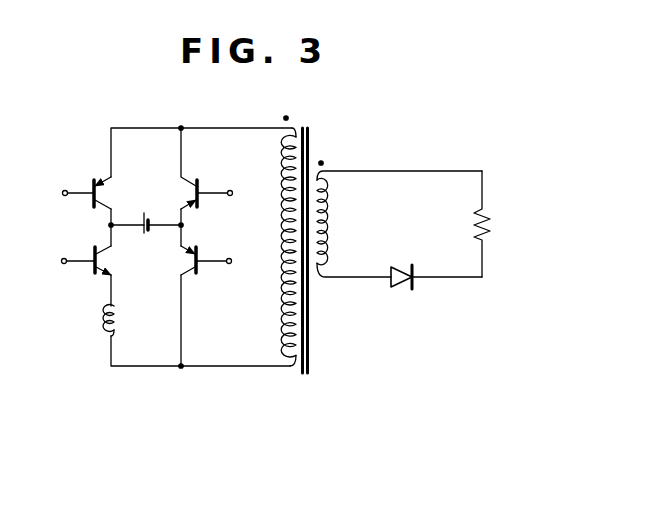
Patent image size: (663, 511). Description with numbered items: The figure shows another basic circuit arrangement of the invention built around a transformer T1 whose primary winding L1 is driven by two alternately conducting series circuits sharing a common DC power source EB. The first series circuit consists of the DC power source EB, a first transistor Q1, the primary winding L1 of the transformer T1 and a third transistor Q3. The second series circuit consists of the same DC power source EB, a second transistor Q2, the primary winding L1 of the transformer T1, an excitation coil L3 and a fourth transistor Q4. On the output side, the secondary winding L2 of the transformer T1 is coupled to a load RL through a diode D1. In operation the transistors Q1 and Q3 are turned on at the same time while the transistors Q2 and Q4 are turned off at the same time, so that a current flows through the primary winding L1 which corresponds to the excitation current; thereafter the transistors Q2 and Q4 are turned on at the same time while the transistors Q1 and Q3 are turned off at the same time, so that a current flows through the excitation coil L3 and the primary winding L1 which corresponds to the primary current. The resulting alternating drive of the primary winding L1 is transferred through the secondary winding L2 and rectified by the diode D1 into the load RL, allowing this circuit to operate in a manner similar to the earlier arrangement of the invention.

The first transistor Q1 is at (87, 185).
The second transistor Q2 is at (207, 168).
The third transistor Q3 is at (206, 274).
The fourth transistor Q4 is at (87, 276).
The DC power source EB is at (146, 241).
The primary winding L1 is at (273, 241).
The secondary winding L2 is at (399, 219).
The excitation coil L3 is at (121, 320).
The transformer T1 is at (303, 127).
The load RL is at (494, 224).
The diode D1 is at (436, 292).